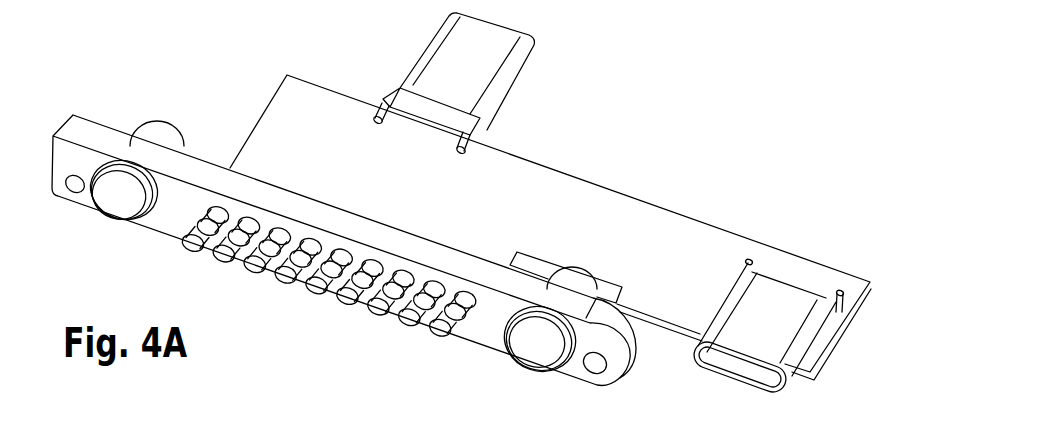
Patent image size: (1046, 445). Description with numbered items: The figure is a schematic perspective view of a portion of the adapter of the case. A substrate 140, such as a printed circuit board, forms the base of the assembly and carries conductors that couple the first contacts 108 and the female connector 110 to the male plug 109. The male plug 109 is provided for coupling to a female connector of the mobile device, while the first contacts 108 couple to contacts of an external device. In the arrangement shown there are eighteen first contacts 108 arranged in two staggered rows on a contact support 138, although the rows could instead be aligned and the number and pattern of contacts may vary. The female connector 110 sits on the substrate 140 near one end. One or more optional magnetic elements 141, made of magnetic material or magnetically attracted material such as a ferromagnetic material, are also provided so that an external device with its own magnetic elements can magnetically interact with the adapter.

The first contacts 108 is at (380, 317).
The male plug 109 is at (527, 70).
The female connector 110 is at (783, 381).
The contact support 138 is at (483, 325).
The substrate 140 is at (577, 176).
The magnetic elements 141 is at (117, 203).